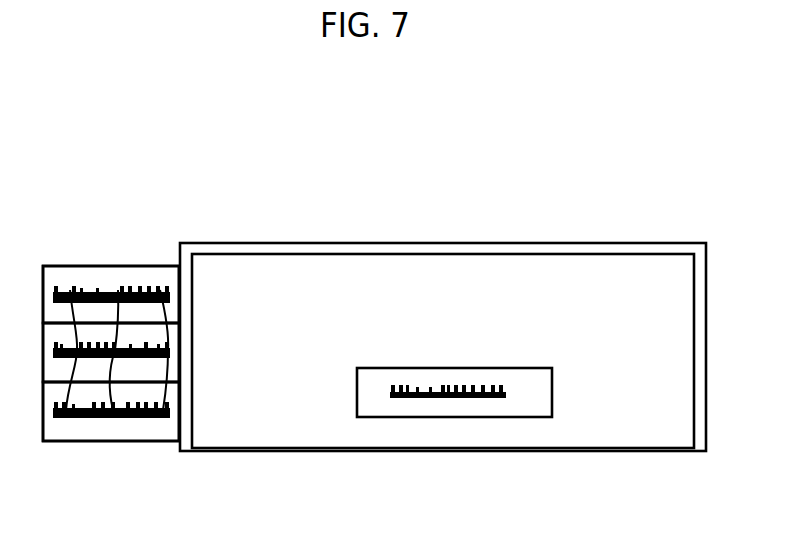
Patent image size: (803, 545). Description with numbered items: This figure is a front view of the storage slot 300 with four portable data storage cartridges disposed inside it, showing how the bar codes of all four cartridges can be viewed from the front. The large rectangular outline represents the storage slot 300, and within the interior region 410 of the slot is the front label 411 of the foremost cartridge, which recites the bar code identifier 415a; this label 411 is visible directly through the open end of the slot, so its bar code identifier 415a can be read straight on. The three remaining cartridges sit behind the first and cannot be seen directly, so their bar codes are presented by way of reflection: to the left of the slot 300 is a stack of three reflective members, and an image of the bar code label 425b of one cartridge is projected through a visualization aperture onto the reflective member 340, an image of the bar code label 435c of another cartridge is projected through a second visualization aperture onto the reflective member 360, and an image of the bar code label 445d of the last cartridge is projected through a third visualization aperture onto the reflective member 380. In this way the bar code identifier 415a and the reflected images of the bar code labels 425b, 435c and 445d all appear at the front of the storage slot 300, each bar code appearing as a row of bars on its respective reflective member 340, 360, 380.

The storage slot 300 is at (514, 238).
The interior region 410 is at (458, 328).
The front label 411 is at (380, 363).
The bar code identifier 415a is at (442, 398).
The bar code label 425b is at (160, 290).
The bar code label 435c is at (118, 290).
The bar code label 445d is at (70, 290).
The reflective member 340 is at (163, 410).
The reflective member 360 is at (113, 410).
The reflective member 380 is at (66, 410).